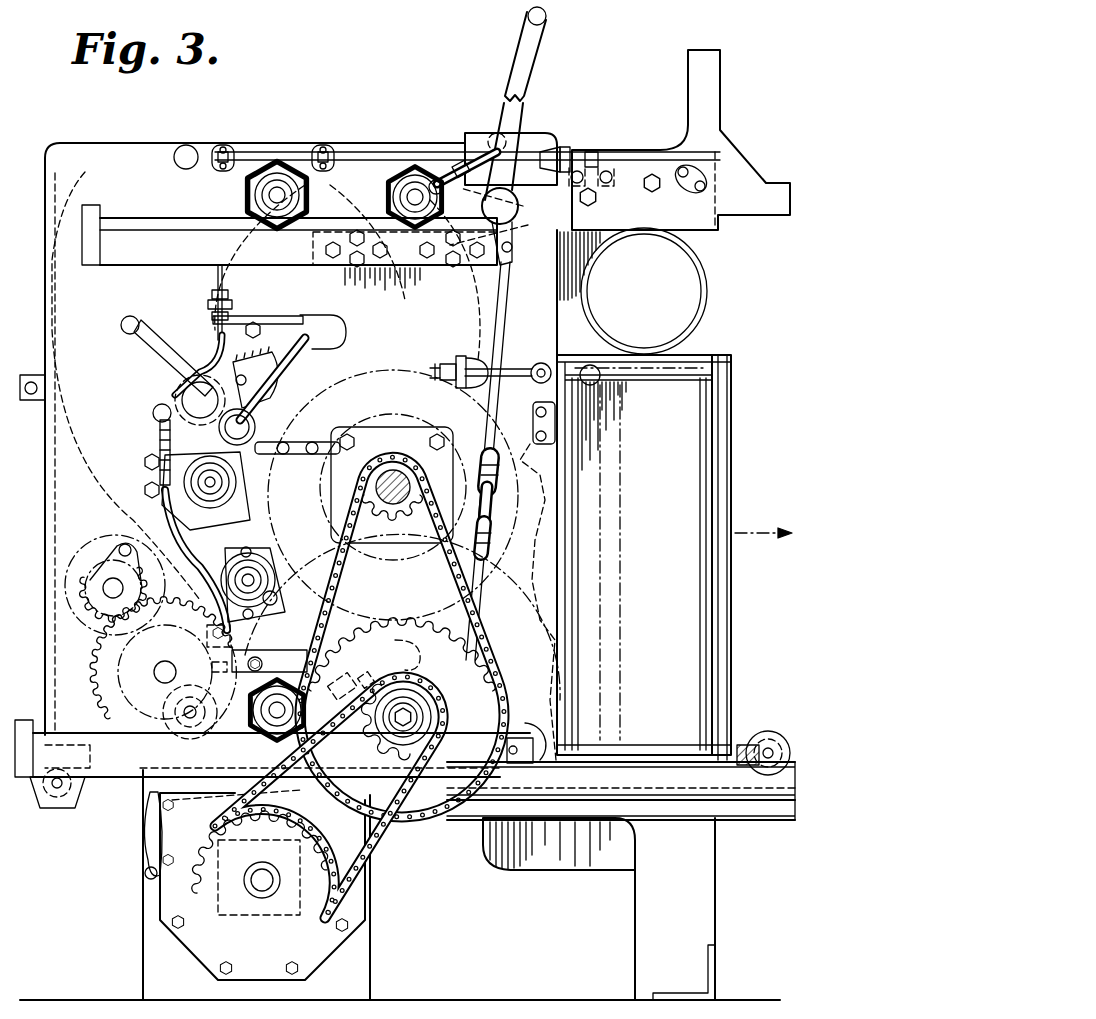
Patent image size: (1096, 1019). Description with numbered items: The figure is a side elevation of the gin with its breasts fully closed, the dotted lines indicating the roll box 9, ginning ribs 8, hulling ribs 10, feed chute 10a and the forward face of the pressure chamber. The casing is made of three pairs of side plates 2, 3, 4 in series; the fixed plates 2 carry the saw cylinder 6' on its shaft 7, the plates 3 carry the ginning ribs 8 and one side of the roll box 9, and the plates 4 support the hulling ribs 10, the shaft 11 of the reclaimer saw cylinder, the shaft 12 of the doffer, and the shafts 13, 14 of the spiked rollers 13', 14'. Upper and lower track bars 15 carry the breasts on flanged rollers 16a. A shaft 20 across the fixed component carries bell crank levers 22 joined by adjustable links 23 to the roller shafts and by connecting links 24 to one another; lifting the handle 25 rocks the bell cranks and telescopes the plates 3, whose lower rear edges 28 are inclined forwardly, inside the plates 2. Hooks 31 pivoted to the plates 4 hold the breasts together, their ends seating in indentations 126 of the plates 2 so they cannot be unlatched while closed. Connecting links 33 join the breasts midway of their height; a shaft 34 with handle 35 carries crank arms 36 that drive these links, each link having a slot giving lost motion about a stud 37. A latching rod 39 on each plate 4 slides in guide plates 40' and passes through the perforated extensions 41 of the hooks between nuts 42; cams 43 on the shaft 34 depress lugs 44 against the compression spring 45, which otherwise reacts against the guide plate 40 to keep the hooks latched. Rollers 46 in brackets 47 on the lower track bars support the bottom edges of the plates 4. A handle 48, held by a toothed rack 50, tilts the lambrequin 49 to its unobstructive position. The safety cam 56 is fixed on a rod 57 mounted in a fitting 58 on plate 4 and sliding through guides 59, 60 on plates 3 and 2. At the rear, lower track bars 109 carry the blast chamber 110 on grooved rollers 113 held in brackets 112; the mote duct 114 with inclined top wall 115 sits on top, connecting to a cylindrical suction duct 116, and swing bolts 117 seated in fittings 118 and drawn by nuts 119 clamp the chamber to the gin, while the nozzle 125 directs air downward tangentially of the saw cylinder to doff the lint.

The plates 2 is at (315, 288).
The plates 3 is at (392, 150).
The plates 4 is at (127, 157).
The saw cylinder 6' is at (393, 495).
The shaft 7 is at (398, 470).
The ginning ribs 8 is at (372, 334).
The roll box 9 is at (400, 296).
The hulling ribs 10 is at (232, 505).
The feed chute 10a is at (126, 379).
The shaft of the reclaimer saw cylinder 11 is at (167, 662).
The shaft of the doffer 12 is at (118, 588).
The shaft 13 is at (275, 566).
The spiked roller 13' is at (268, 613).
The shaft 14 is at (248, 572).
The spiked roller 14' is at (246, 526).
The track bars 15 is at (160, 243).
The flanged rollers 16a is at (262, 218).
The shaft 20 is at (512, 205).
The bell crank levers 22 is at (518, 230).
The adjustable link 23 is at (455, 165).
The connecting links 24 is at (503, 322).
The handle 25 is at (540, 78).
The lower rear edges 28 is at (392, 590).
The hooks 31 is at (300, 317).
The connecting links 33 is at (256, 428).
The shaft 34 is at (198, 400).
The operating handle 35 is at (145, 348).
The crank arm 36 is at (155, 418).
The stud 37 is at (325, 455).
The latching and releasing rod 39 is at (170, 526).
The guide plate 40 is at (175, 572).
The guide plates 40' is at (239, 302).
The flat perforated extensions 41 is at (233, 304).
The nuts 42 is at (210, 317).
The cams 43 is at (215, 345).
The lugs 44 is at (160, 446).
The compression spring 45 is at (146, 462).
The rollers 46 is at (45, 800).
The brackets 47 is at (62, 808).
The handle 48 is at (312, 352).
The lambrequin 49 is at (308, 456).
The toothed rack 50 is at (255, 374).
The actuating cam 56 is at (566, 150).
The rectilinear rod 57 is at (422, 158).
The fitting 58 is at (233, 147).
The guide 59 is at (323, 147).
The guide 60 is at (598, 152).
The lower track bars 109 is at (560, 778).
The blast chamber 110 is at (738, 472).
The brackets 112 is at (545, 735).
The grooved rollers 113 is at (521, 735).
The mote duct 114 is at (640, 290).
The top wall 115 is at (597, 240).
The cylindrical duct 116 is at (696, 336).
The swing bolts 117 is at (508, 372).
The fittings 118 is at (458, 356).
The nuts 119 is at (445, 365).
The nozzle 125 is at (520, 493).
The indentations 126 is at (346, 326).